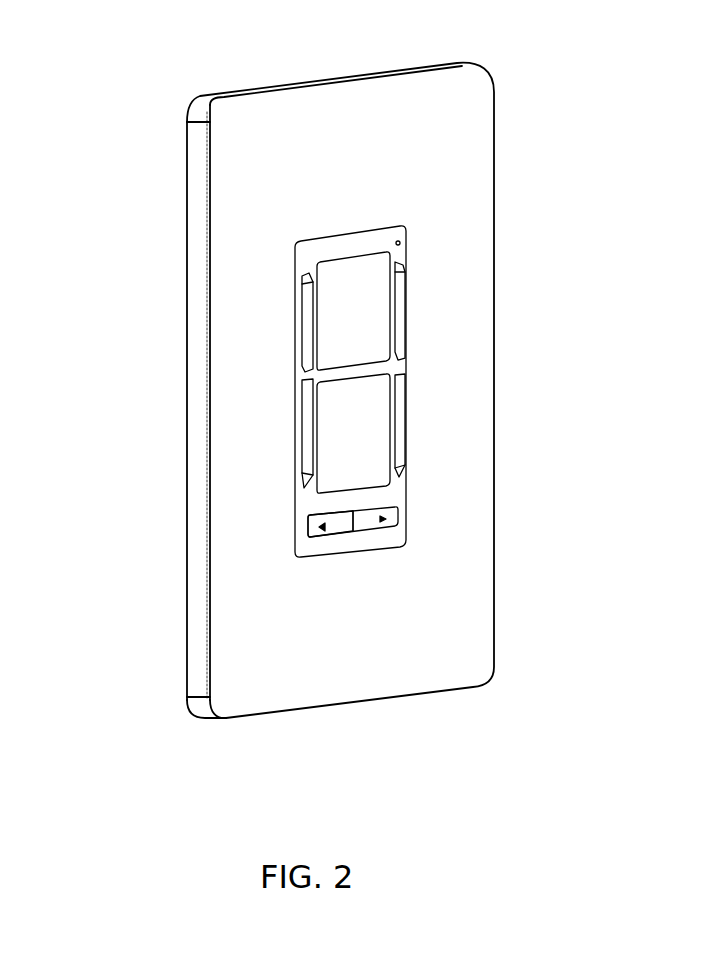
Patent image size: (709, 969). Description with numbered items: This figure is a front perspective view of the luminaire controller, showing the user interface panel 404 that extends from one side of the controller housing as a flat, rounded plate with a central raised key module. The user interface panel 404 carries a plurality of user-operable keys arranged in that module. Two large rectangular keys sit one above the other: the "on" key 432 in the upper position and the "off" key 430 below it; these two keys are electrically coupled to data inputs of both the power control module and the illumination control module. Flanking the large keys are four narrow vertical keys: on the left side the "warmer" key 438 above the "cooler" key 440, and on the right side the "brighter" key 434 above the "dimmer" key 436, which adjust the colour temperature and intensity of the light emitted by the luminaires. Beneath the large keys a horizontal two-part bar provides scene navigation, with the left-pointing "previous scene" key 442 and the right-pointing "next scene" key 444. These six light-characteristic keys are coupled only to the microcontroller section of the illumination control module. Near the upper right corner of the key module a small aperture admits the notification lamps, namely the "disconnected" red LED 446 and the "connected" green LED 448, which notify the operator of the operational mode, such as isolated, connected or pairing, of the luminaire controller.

The user interface panel 404 is at (494, 125).
The "off" key 430 is at (383, 390).
The "on" key 432 is at (325, 277).
The "brighter" key 434 is at (404, 311).
The "dimmer" key 436 is at (404, 438).
The "warmer" key 438 is at (308, 326).
The "cooler" key 440 is at (307, 455).
The "previous scene" key 442 is at (309, 525).
The "next scene" key 444 is at (399, 512).
The "disconnected" red LED 446 is at (531, 215).
The "connected" green LED 448 is at (401, 243).